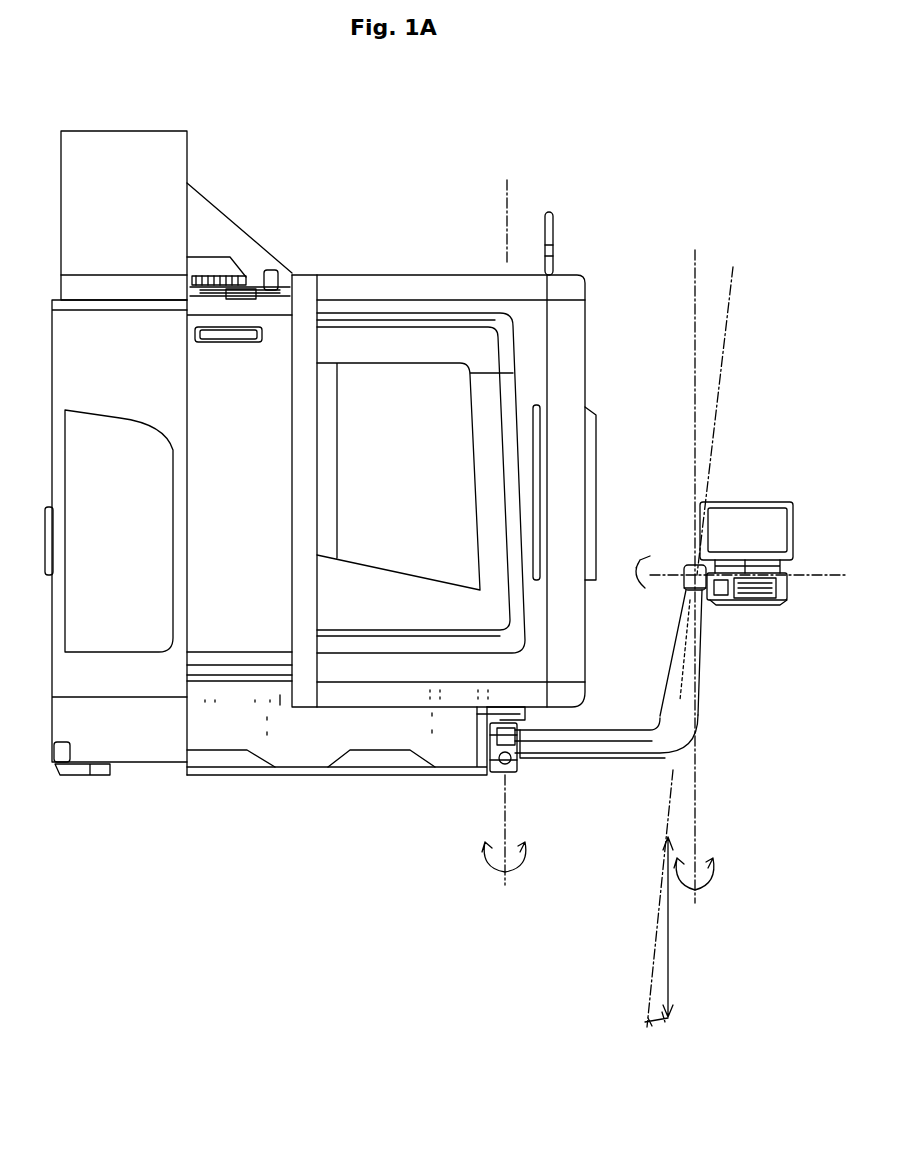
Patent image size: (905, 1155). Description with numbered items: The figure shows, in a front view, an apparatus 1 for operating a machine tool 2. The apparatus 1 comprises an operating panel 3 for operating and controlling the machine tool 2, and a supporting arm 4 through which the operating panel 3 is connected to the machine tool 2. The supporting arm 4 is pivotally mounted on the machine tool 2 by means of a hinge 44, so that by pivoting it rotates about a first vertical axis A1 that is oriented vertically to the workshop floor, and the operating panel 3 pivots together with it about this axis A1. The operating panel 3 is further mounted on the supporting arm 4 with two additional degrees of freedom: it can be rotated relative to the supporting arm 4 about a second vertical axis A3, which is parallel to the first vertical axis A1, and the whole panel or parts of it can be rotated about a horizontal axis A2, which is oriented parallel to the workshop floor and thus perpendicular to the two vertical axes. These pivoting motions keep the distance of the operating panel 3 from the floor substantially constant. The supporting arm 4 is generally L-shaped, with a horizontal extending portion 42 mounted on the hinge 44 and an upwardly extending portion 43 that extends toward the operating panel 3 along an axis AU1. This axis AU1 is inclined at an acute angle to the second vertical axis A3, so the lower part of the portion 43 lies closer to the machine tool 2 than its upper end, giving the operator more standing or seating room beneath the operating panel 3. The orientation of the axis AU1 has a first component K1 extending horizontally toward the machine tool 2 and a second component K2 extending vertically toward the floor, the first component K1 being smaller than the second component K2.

The apparatus 1 is at (772, 688).
The machine tool 2 is at (600, 349).
The operating panel 3 is at (752, 479).
The supporting arm 4 is at (700, 700).
The horizontal extending portion 42 is at (668, 758).
The upwardly extending portion 43 is at (665, 640).
The hinge 44 is at (515, 770).
The first vertical axis A1 is at (500, 797).
The horizontal axis A2 is at (822, 559).
The second vertical axis A3 is at (700, 805).
The axis AU1 is at (740, 278).
The first component K1 is at (655, 1025).
The second component K2 is at (672, 962).